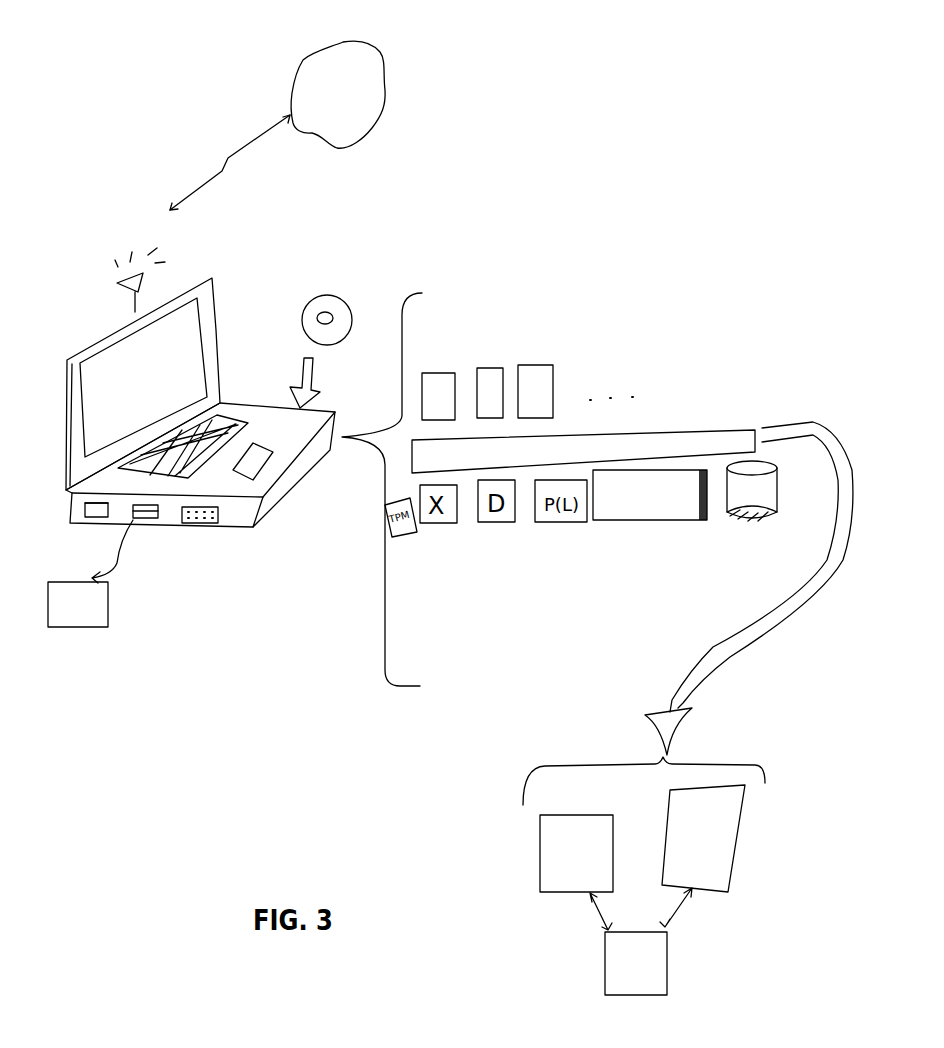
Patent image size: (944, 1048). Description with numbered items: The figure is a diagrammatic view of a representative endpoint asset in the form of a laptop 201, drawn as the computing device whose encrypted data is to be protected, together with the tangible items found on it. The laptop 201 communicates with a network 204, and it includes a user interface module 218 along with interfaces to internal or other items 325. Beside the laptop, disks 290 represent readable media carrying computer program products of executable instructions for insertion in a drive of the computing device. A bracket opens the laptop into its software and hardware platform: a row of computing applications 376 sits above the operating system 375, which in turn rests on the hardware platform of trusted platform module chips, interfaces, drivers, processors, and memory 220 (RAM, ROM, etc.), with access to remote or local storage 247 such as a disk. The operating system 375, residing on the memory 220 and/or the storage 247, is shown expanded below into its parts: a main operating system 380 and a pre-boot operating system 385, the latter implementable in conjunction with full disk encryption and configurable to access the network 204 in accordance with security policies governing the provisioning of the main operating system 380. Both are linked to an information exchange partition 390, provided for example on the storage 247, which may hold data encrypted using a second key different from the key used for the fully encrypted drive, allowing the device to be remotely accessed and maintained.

The laptop 201 is at (59, 325).
The network 204 is at (343, 40).
The user interface module 218 is at (95, 486).
The memory 220 is at (603, 523).
The storage 247 is at (777, 483).
The disks 290 is at (333, 297).
The other items 325 is at (110, 615).
The operating system 375 is at (412, 459).
The computing applications 376 is at (743, 360).
The main operating system 380 is at (538, 852).
The pre-boot operating system 385 is at (738, 832).
The information exchange partition 390 is at (667, 965).